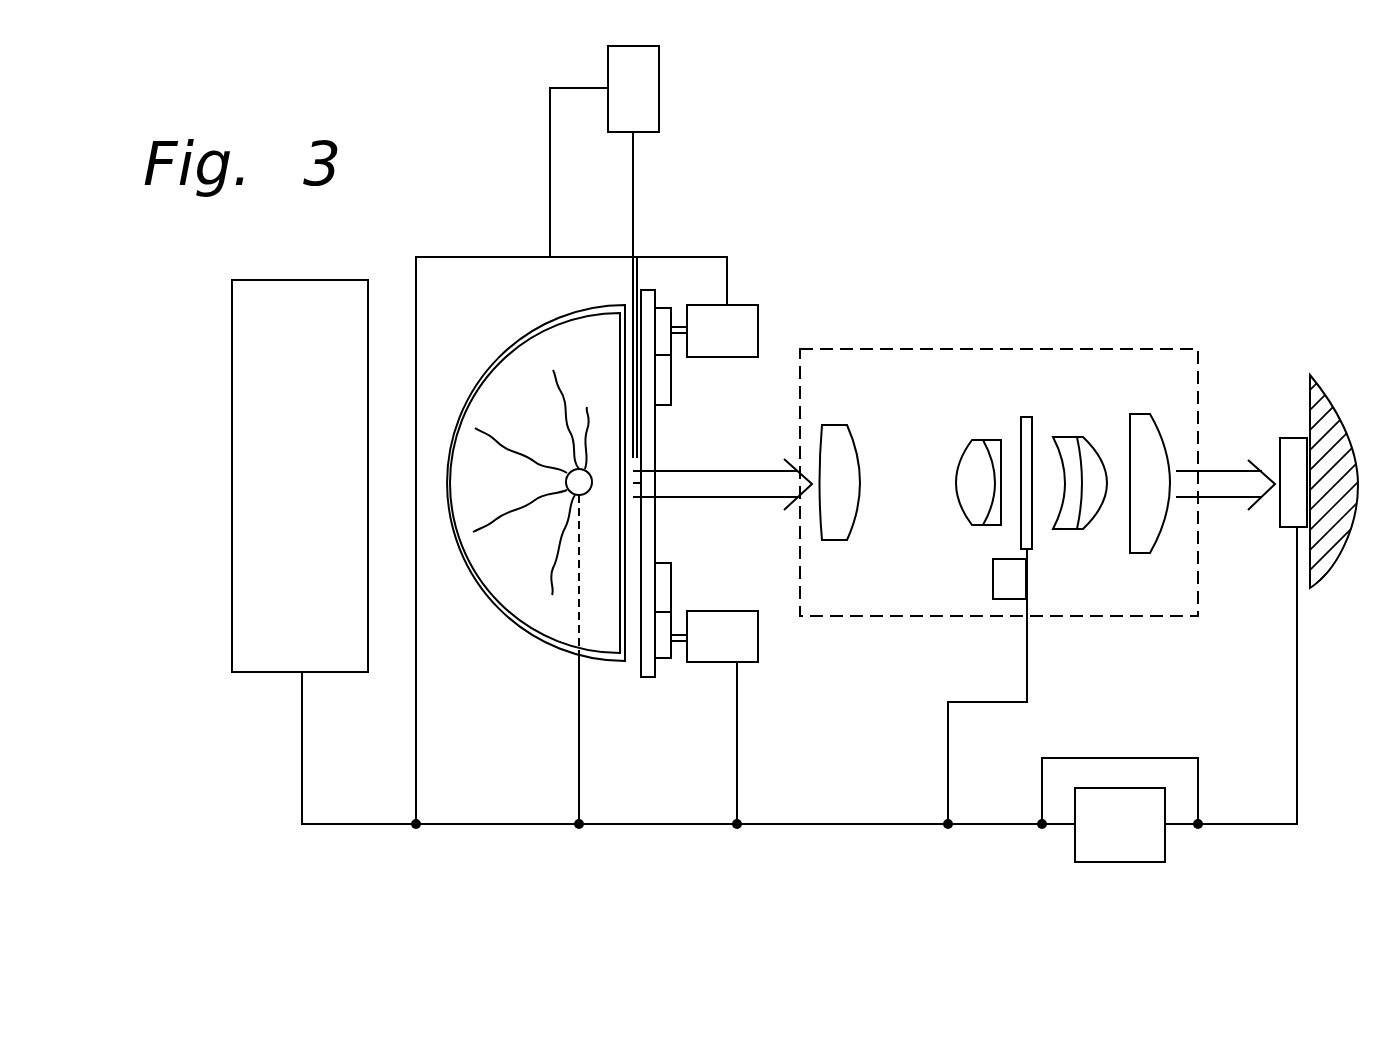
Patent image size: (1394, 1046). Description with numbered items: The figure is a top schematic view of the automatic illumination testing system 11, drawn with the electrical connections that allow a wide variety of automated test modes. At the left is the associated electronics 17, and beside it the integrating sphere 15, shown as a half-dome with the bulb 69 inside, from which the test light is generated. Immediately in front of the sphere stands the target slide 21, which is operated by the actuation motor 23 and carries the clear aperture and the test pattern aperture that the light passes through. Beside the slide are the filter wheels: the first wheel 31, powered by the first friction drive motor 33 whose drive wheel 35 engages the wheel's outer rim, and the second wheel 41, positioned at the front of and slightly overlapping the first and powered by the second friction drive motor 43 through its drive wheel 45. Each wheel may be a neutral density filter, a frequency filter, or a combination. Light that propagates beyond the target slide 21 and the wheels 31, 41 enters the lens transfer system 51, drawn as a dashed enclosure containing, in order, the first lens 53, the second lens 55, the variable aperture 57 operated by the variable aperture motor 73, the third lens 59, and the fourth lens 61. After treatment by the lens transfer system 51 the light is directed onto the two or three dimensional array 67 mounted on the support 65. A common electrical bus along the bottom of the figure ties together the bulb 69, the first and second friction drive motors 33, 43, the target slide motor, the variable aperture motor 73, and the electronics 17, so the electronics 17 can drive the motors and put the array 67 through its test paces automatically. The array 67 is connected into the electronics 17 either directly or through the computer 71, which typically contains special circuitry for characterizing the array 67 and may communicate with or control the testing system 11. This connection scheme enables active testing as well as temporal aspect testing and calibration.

The automatic illumination testing system 11 is at (782, 127).
The integrating sphere 15 is at (513, 620).
The associated electronics 17 is at (242, 443).
The target slide 21 is at (634, 157).
The actuation motor 23 is at (659, 77).
The first wheel 31 is at (650, 677).
The first friction drive motor 33 is at (758, 645).
The drive wheel 35 is at (665, 660).
The second wheel 41 is at (647, 290).
The second friction drive motor 43 is at (745, 305).
The drive wheel 45 is at (663, 308).
The lens transfer system 51 is at (1217, 332).
The first lens 53 is at (837, 425).
The second lens 55 is at (992, 440).
The variable aperture 57 is at (1025, 417).
The third lens 59 is at (1070, 437).
The fourth lens 61 is at (1142, 414).
The support 65 is at (1345, 428).
The two or three dimensional array 67 is at (1295, 438).
The bulb 69 is at (539, 510).
The computer 71 is at (1129, 852).
The variable aperture motor 73 is at (993, 578).